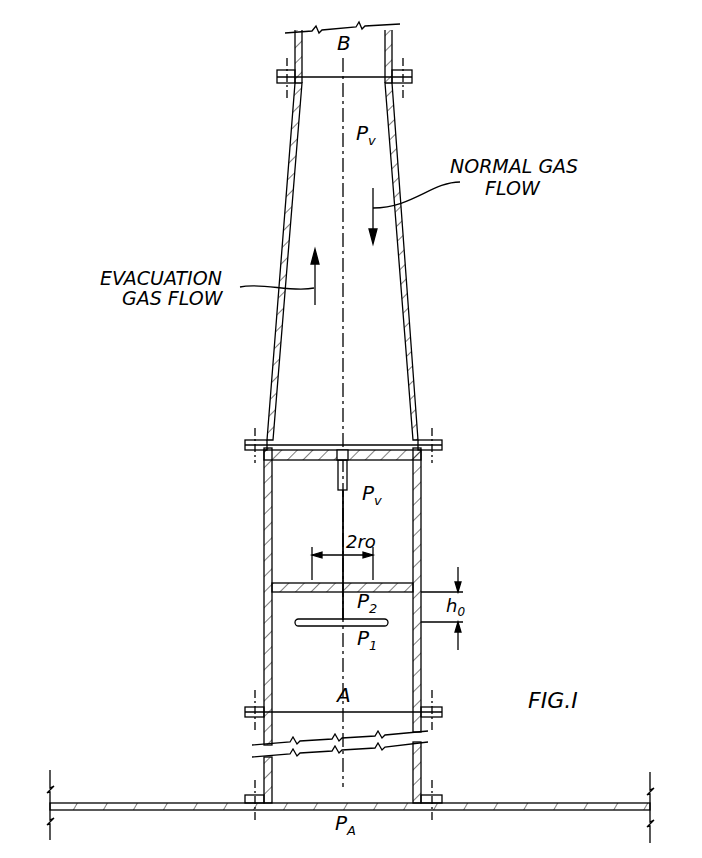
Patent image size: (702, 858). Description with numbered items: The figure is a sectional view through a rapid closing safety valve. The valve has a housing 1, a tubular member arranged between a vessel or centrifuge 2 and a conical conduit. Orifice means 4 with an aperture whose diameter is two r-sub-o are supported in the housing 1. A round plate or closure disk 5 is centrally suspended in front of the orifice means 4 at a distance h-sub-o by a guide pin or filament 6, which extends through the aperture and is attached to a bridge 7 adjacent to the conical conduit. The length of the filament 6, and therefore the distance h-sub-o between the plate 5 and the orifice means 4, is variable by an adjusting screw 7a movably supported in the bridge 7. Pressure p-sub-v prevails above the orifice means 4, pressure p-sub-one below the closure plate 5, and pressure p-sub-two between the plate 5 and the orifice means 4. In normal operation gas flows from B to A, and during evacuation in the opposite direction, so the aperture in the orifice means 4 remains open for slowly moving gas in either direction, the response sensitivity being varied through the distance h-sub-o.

The housing 1 is at (264, 557).
The vessel or centrifuge 2 is at (150, 802).
The orifice means 4 is at (293, 585).
The closure disk 5 is at (318, 627).
The guide pin or filament 6 is at (340, 512).
The bridge 7 is at (319, 450).
The adjusting screw 7a is at (345, 450).